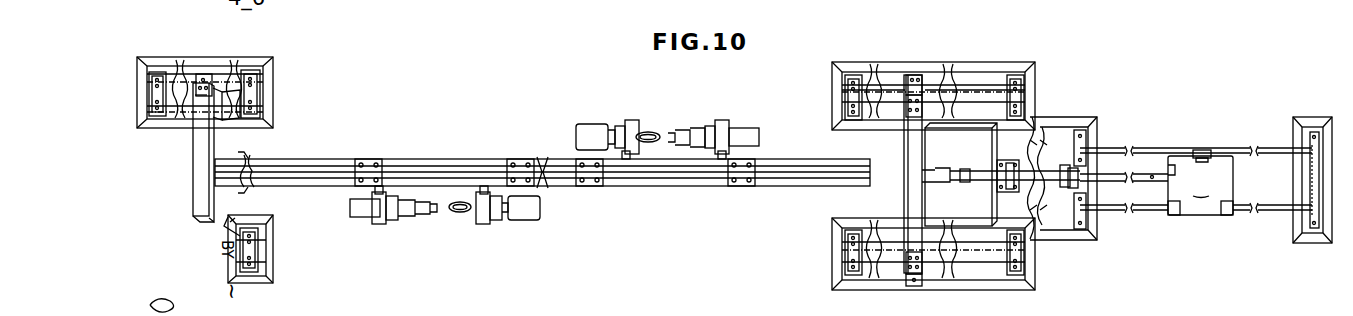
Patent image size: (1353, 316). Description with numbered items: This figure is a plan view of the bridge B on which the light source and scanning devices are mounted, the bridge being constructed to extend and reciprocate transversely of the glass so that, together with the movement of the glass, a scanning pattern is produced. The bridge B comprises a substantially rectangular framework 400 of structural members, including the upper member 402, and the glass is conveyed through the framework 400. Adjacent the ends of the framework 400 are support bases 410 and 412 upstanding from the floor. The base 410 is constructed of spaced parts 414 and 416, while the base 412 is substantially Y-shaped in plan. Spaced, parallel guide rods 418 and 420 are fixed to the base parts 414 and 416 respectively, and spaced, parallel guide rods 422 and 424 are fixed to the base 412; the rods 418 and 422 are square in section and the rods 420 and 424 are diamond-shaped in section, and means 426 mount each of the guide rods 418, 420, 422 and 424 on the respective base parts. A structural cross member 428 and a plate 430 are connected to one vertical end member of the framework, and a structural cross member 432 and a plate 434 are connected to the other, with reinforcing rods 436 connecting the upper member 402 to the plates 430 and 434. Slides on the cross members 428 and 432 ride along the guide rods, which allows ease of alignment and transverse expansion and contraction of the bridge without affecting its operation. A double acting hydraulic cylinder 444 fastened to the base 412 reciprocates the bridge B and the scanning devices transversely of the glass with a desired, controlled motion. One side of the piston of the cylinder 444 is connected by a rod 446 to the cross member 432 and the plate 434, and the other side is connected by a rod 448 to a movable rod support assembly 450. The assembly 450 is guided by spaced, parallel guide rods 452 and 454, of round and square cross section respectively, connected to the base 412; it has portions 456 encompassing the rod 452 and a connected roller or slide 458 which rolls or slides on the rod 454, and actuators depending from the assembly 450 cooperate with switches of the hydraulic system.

The rectangular framework 400 is at (550, 158).
The upper member 402 is at (395, 159).
The support base 410 is at (281, 70).
The support base 412 is at (935, 95).
The base part 414 is at (192, 63).
The base part 416 is at (263, 243).
The guide rod 418 is at (238, 88).
The guide rod 420 is at (236, 220).
The guide rod 422 is at (935, 100).
The guide rod 424 is at (982, 255).
The mounting means 426 is at (158, 76).
The structural cross member 428 is at (198, 173).
The plate 430 is at (210, 224).
The structural cross member 432 is at (920, 152).
The plate 434 is at (905, 206).
The reinforcing rods 436 is at (272, 156).
The double acting hydraulic cylinder 444 is at (1050, 165).
The rod 446 is at (962, 176).
The rod 448 is at (1140, 160).
The movable rod support assembly 450 is at (1200, 185).
The guide rod 452 is at (1138, 214).
The guide rod 454 is at (1262, 150).
The portions 456 is at (1226, 216).
The roller or slide 458 is at (1203, 148).
The bridge B is at (466, 142).